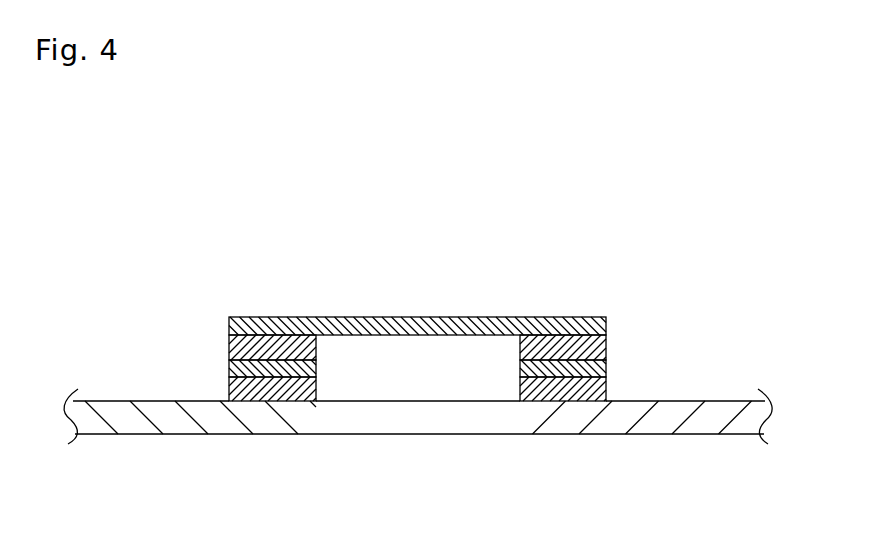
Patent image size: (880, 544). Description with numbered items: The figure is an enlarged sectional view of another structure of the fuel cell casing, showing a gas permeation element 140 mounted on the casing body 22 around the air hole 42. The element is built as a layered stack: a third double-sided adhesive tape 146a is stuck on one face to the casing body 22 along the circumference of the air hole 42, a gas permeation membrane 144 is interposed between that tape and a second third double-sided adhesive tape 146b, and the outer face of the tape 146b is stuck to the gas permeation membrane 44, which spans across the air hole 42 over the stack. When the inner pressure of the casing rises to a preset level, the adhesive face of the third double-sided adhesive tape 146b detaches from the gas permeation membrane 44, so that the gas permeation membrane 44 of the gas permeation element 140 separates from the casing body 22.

The gas permeation element 140 is at (471, 259).
The gas permeation membrane 44 is at (550, 327).
The third double-sided adhesive tape 146b is at (583, 343).
The gas permeation membrane 144 is at (585, 362).
The third double-sided adhesive tape 146a is at (589, 391).
The casing body 22 is at (705, 407).
The air hole 42 is at (417, 425).